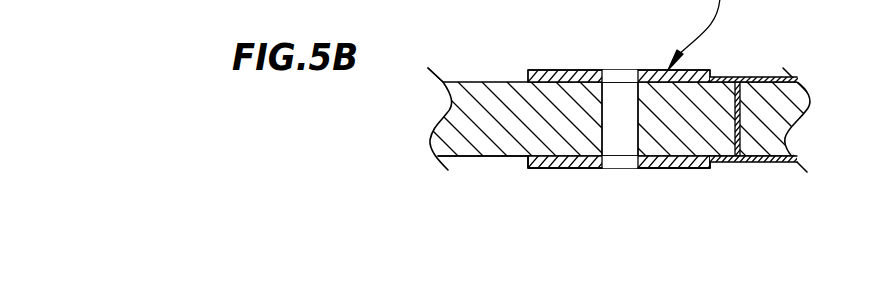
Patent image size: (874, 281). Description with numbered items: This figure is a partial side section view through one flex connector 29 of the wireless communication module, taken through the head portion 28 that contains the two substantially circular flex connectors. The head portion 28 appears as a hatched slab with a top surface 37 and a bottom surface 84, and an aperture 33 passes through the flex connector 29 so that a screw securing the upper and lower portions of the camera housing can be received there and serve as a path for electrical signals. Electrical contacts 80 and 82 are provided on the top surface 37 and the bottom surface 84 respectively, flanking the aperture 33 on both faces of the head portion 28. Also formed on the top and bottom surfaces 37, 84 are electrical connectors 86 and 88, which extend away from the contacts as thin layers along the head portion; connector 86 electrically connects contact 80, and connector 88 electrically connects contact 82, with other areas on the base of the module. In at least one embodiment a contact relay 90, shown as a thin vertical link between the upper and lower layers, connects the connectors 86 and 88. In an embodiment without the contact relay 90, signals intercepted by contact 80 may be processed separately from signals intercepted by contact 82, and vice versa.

The head portion 28 is at (448, 132).
The flex connector 29 is at (678, 172).
The aperture 33 is at (636, 116).
The top surface 37 is at (471, 92).
The electrical contact 80 is at (642, 70).
The electrical contact 82 is at (633, 170).
The bottom surface 84 is at (478, 156).
The electrical connector 86 is at (755, 80).
The electrical connector 88 is at (779, 158).
The contact relay 90 is at (741, 104).